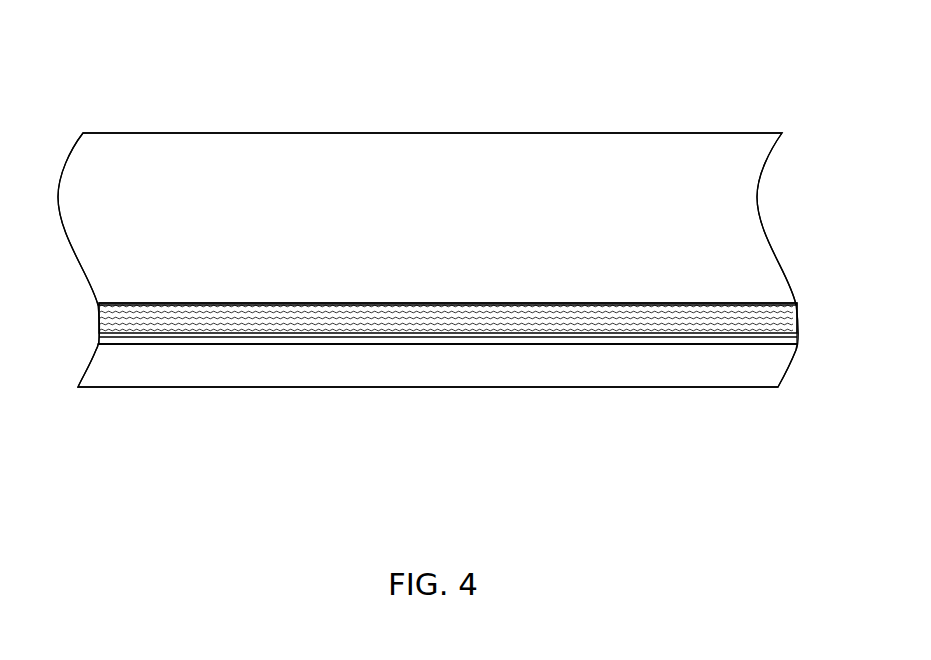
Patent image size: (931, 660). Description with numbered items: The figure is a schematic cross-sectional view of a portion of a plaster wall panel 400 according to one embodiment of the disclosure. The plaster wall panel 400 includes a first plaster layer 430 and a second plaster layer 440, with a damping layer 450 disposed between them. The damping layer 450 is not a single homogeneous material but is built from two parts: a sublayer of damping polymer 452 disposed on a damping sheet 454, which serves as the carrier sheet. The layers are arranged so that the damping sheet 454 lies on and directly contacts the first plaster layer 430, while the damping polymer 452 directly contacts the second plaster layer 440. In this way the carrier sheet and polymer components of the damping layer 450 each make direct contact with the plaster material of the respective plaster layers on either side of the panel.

The plaster wall panel 400 is at (145, 87).
The first plaster layer 430 is at (643, 380).
The second plaster layer 440 is at (562, 172).
The damping layer 450 is at (278, 347).
The damping polymer 452 is at (355, 317).
The damping sheet 454 is at (453, 342).